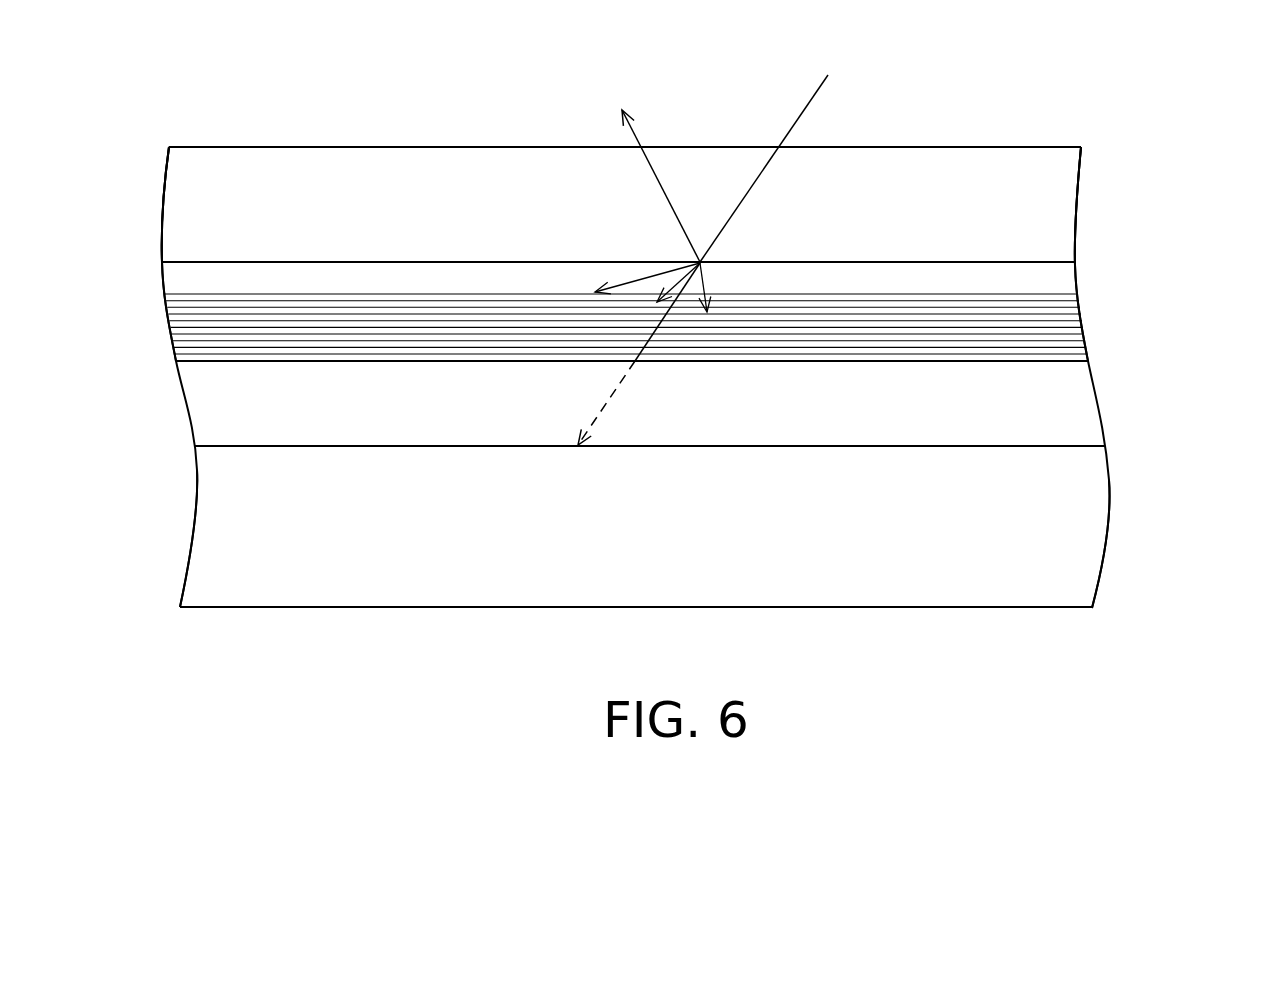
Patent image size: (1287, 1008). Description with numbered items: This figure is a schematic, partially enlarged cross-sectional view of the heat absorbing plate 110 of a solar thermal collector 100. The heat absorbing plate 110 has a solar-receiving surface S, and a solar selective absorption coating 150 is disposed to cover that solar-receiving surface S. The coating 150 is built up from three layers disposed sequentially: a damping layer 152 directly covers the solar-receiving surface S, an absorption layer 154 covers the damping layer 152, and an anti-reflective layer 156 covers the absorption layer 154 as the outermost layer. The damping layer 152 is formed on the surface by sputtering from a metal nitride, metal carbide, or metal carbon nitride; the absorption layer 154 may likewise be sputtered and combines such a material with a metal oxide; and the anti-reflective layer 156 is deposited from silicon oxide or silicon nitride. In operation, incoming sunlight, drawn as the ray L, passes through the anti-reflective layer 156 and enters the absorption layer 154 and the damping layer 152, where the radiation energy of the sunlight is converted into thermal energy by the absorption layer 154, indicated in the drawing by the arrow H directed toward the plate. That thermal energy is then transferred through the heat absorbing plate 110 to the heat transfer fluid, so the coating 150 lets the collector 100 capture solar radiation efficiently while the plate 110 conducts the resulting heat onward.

The solar thermal collector 100 is at (1183, 683).
The heat absorbing plate 110 is at (1055, 525).
The solar selective absorption coating 150 is at (1201, 174).
The damping layer 152 is at (1035, 404).
The absorption layer 154 is at (992, 310).
The anti-reflective layer 156 is at (1048, 211).
The solar-receiving surface S is at (1022, 433).
The incident light L is at (724, 173).
The hologram image light H is at (639, 354).